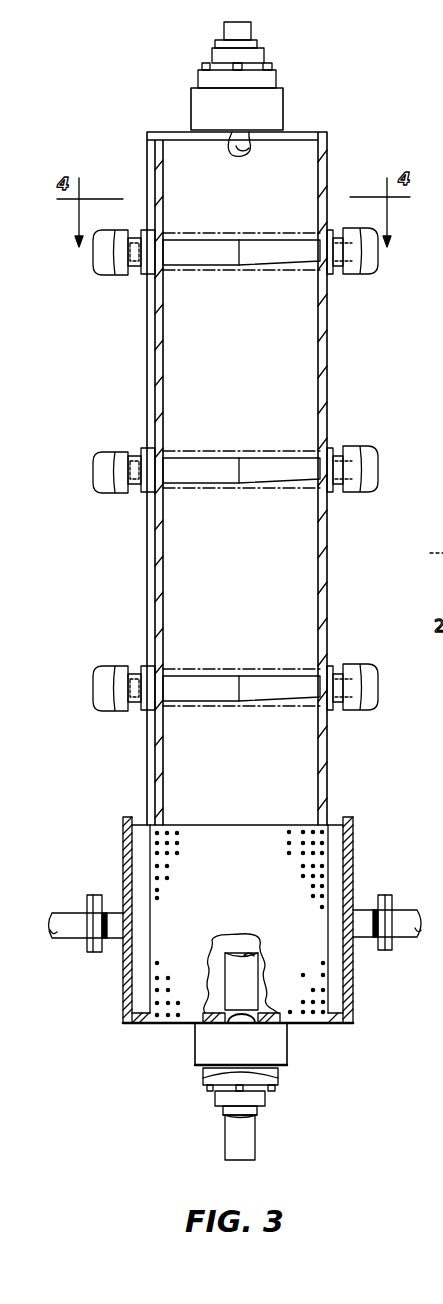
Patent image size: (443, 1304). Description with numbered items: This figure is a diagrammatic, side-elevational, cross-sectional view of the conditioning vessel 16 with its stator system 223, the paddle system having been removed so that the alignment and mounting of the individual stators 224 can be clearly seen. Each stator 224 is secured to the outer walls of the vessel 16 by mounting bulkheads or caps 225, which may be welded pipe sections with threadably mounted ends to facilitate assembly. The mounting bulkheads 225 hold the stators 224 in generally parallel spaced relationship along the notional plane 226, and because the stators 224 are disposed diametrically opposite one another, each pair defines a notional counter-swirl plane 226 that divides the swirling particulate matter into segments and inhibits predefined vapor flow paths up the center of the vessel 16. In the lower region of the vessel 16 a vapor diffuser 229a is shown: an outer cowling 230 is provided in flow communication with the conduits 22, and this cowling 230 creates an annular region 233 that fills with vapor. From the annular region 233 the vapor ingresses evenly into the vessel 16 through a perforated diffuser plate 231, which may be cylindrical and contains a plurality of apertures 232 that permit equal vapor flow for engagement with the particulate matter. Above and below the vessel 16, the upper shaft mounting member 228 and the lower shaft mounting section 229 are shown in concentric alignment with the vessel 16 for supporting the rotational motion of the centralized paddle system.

The vessel 16 is at (327, 353).
The conduits 22 is at (107, 941).
The stator system 223 is at (130, 492).
The stator 224 is at (257, 240).
The securement caps or mounting bulkheads 225 is at (378, 258).
The notional counter-swirl plane 226 is at (237, 266).
The upper shaft mounting member 228 is at (283, 106).
The lower shaft mounting section 229 is at (287, 1045).
The vapor diffuser 229a is at (144, 971).
The outer cowling 230 is at (353, 870).
The perforated diffuser plate 231 is at (170, 1015).
The apertures 232 is at (157, 845).
The annular region 233 is at (335, 858).